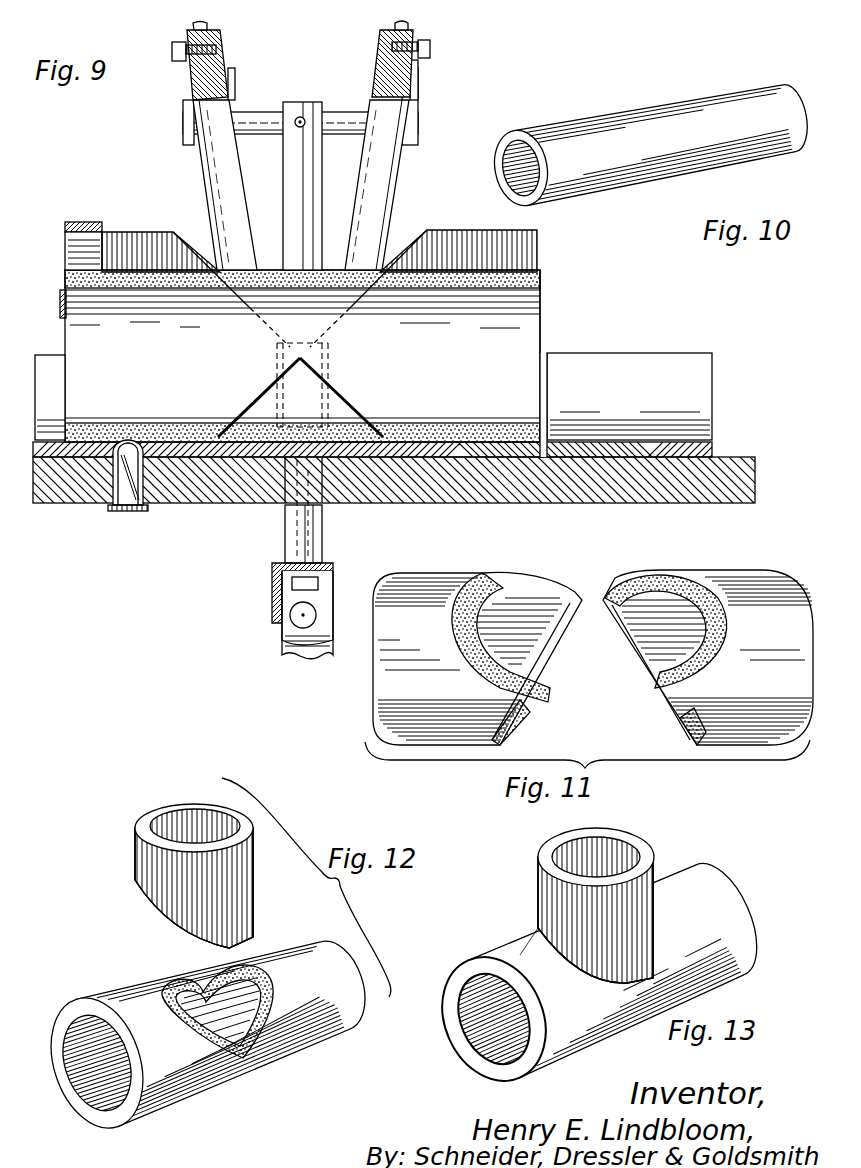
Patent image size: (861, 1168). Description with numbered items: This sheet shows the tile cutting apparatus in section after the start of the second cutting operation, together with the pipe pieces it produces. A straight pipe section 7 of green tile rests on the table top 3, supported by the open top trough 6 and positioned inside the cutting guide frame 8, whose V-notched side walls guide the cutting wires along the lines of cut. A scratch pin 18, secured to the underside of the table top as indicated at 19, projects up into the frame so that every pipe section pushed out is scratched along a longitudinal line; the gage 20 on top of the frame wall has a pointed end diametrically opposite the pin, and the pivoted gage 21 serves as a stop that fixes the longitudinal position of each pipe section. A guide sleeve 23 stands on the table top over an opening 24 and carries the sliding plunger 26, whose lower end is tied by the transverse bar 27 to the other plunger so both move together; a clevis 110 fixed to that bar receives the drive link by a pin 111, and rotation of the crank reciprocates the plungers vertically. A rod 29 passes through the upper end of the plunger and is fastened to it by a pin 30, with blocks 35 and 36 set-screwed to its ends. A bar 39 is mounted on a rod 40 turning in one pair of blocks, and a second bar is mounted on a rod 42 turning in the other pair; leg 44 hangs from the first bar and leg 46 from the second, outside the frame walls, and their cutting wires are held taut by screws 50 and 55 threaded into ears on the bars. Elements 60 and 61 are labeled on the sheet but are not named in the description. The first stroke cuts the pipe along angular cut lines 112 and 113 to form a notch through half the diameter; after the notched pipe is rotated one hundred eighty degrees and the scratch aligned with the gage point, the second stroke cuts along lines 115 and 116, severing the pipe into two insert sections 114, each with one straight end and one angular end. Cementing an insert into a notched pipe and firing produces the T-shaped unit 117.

In FIG. 9, the table top 3 is at (451, 488).
In FIG. 9, the open top trough 6 is at (690, 410).
In FIG. 9, the straight pipe section 7 is at (479, 427).
In FIG. 10, the straight pipe section 7 is at (638, 168).
In FIG. 12, the straight pipe section 7 is at (165, 1098).
In FIG. 13, the straight pipe section 7 is at (598, 973).
In FIG. 9, the cutting guide frame 8 is at (505, 457).
In FIG. 9, the scratch pin 18 is at (115, 512).
In FIG. 9, the pin securing point 19 is at (146, 511).
In FIG. 9, the gage 20 is at (88, 220).
In FIG. 9, the gage 21 is at (60, 296).
In FIG. 9, the guide sleeve 23 is at (328, 362).
In FIG. 9, the opening 24 is at (325, 514).
In FIG. 9, the plunger 26 is at (285, 162).
In FIG. 9, the transverse bar 27 is at (272, 600).
In FIG. 9, the rod 29 is at (257, 113).
In FIG. 9, the pin 30 is at (300, 116).
In FIG. 9, the block 35 is at (409, 142).
In FIG. 9, the block 36 is at (184, 145).
In FIG. 9, the bar 39 is at (380, 56).
In FIG. 9, the rod 40 is at (412, 78).
In FIG. 9, the rod 42 is at (192, 86).
In FIG. 9, the leg 44 is at (385, 180).
In FIG. 9, the leg 46 is at (211, 181).
In FIG. 9, the screw 50 is at (430, 47).
In FIG. 9, the screw 55 is at (172, 51).
In FIG. 9, the bolt 60 is at (409, 24).
In FIG. 9, the bolt 61 is at (191, 27).
In FIG. 9, the clevis 110 is at (321, 604).
In FIG. 9, the pin 111 is at (340, 400).
In FIG. 9, the angular cut line 112 is at (266, 403).
In FIG. 11, the angular cut line 112 is at (676, 730).
In FIG. 12, the angular cut line 112 is at (236, 963).
In FIG. 11, the angular cut line 113 is at (522, 729).
In FIG. 12, the angular cut line 113 is at (173, 982).
In FIG. 9, the insert section 114 is at (335, 325).
In FIG. 11, the insert section 114 is at (376, 698).
In FIG. 12, the insert section 114 is at (157, 891).
In FIG. 13, the insert section 114 is at (596, 905).
In FIG. 9, the cut line 115 is at (260, 331).
In FIG. 11, the cut line 115 is at (708, 574).
In FIG. 11, the cut line 116 is at (522, 575).
In FIG. 13, the T-shaped unit 117 is at (520, 957).